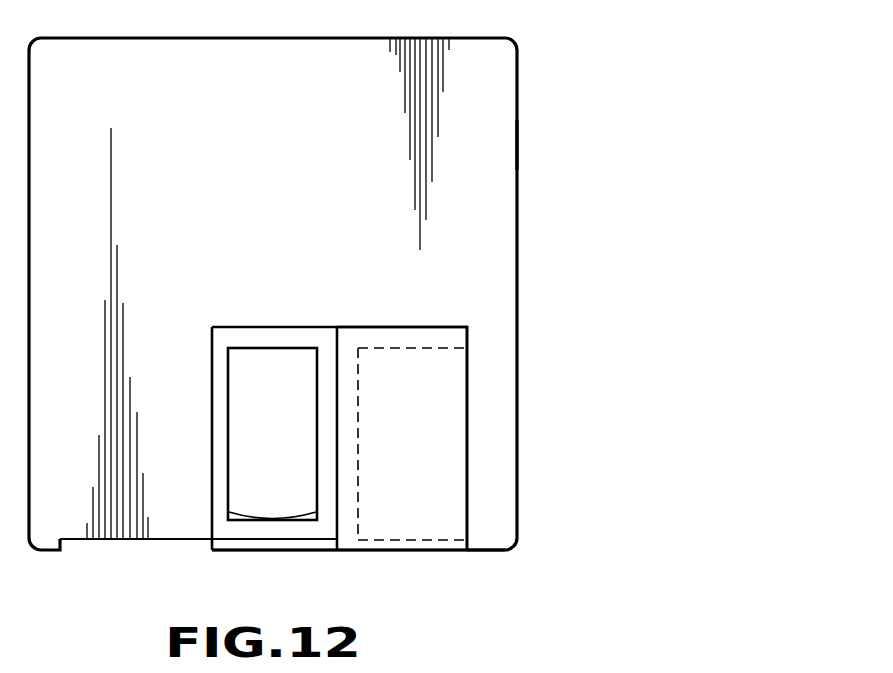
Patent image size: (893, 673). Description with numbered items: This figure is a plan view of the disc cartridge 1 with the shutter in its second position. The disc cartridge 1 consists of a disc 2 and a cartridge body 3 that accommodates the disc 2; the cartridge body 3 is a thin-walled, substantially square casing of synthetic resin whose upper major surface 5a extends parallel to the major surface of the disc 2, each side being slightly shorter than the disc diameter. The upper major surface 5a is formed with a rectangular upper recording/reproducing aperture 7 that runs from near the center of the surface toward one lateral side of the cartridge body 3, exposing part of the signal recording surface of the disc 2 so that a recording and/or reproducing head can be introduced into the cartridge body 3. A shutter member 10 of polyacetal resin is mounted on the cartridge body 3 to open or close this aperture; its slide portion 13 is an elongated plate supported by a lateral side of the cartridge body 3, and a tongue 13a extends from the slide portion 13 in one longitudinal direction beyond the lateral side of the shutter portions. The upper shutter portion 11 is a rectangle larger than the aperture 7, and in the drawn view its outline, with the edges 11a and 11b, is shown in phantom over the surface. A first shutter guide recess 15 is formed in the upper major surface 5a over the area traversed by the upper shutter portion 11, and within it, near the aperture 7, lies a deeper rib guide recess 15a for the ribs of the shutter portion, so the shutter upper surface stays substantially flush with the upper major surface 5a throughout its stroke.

The disc cartridge 1 is at (528, 77).
The disc 2 is at (262, 500).
The cartridge body 3 is at (517, 143).
The upper major surface 5a is at (336, 62).
The upper recording/reproducing aperture 7 is at (232, 366).
The shutter member 10 is at (424, 552).
The upper shutter portion 11 is at (455, 470).
The upper edge of head opening 11a is at (415, 338).
The side edge of head opening 11b is at (354, 488).
The slide portion 13 is at (336, 546).
The tongue 13a is at (268, 552).
The first shutter guide recess 15 is at (468, 388).
The rib guide recess 15a is at (313, 336).